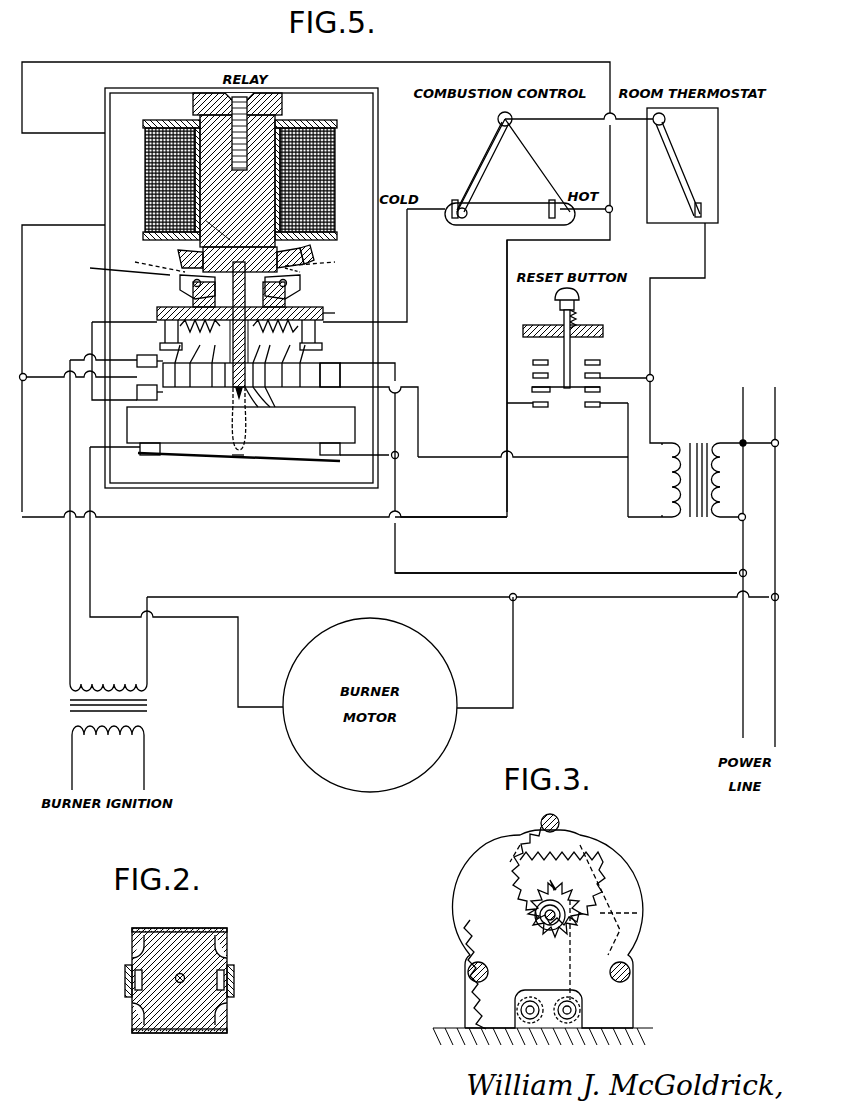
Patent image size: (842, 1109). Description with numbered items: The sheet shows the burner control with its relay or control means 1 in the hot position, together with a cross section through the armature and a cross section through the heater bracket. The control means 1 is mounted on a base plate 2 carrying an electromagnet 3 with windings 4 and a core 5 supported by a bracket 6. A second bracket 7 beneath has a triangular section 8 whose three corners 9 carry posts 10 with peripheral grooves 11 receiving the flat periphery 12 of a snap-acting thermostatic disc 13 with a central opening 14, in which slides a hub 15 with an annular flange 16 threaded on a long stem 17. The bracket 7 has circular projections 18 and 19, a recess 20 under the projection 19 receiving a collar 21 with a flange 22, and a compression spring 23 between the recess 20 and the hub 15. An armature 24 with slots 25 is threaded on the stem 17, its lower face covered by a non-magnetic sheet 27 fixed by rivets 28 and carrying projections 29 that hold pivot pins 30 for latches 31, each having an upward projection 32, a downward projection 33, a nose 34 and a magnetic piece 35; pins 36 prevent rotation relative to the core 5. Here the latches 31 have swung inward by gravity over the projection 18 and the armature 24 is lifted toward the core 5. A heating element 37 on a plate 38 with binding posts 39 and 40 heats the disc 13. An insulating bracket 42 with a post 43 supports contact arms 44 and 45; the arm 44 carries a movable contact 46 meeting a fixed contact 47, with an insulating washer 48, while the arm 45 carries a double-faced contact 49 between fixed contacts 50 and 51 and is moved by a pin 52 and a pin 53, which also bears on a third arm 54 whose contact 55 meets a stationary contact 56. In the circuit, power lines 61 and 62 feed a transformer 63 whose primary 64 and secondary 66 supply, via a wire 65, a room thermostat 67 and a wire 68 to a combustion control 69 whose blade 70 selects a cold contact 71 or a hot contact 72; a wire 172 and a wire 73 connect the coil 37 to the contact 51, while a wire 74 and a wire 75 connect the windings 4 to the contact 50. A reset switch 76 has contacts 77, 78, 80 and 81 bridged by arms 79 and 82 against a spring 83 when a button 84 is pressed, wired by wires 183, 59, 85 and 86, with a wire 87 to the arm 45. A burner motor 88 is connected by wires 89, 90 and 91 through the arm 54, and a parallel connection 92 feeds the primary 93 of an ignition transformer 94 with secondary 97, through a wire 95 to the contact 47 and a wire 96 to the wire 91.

In FIG. 5, the control means 1 is at (367, 88).
In FIG. 5, the base plate 2 is at (373, 130).
In FIG. 5, the electromagnet 3 is at (303, 116).
In FIG. 5, the windings 4 is at (335, 166).
In FIG. 5, the core 5 is at (205, 140).
In FIG. 5, the bracket 6 is at (196, 95).
In FIG. 3, the second bracket 7 is at (633, 1000).
In FIG. 3, the triangular section 8 is at (524, 833).
In FIG. 3, the corners 9 is at (560, 817).
In FIG. 5, the posts 10 is at (157, 313).
In FIG. 3, the posts 10 is at (541, 820).
In FIG. 5, the peripheral grooves 11 is at (160, 347).
In FIG. 5, the flat periphery 12 is at (312, 363).
In FIG. 5, the thermostatic disc 13 is at (276, 363).
In FIG. 5, the central opening 14 is at (190, 366).
In FIG. 5, the hub 15 is at (214, 366).
In FIG. 5, the annular flange 16 is at (257, 366).
In FIG. 5, the stem 17 is at (232, 380).
In FIG. 2, the stem 17 is at (185, 978).
In FIG. 3, the stem 17 is at (535, 912).
In FIG. 5, the circular projection 18 is at (287, 397).
In FIG. 5, the circular projection 19 is at (291, 366).
In FIG. 5, the recess 20 is at (263, 290).
In FIG. 3, the recess 20 is at (530, 918).
In FIG. 5, the collar 21 is at (193, 290).
In FIG. 3, the collar 21 is at (520, 870).
In FIG. 5, the flange 22 is at (205, 255).
In FIG. 5, the compression spring 23 is at (230, 340).
In FIG. 3, the compression spring 23 is at (565, 905).
In FIG. 5, the armature 24 is at (205, 235).
In FIG. 2, the armature 24 is at (228, 942).
In FIG. 5, the slots 25 is at (148, 230).
In FIG. 2, the slots 25 is at (138, 952).
In FIG. 5, the non-magnetic metallic sheet 27 is at (178, 255).
In FIG. 2, the non-magnetic metallic sheet 27 is at (195, 928).
In FIG. 2, the rivets 28 is at (145, 928).
In FIG. 5, the projections 29 is at (222, 263).
In FIG. 2, the projections 29 is at (132, 960).
In FIG. 5, the pivot pin 30 is at (120, 267).
In FIG. 5, the latches 31 is at (178, 283).
In FIG. 2, the latches 31 is at (118, 995).
In FIG. 5, the upward projection 32 is at (300, 252).
In FIG. 2, the upward projection 32 is at (135, 985).
In FIG. 5, the downward projection 33 is at (295, 330).
In FIG. 5, the nose 34 is at (300, 270).
In FIG. 2, the nose 34 is at (145, 1020).
In FIG. 5, the magnetic piece 35 is at (312, 256).
In FIG. 2, the magnetic piece 35 is at (125, 975).
In FIG. 5, the pins 36 is at (148, 180).
In FIG. 2, the pins 36 is at (175, 928).
In FIG. 5, the electrical resistance heating element 37 is at (170, 366).
In FIG. 3, the electrical resistance heating element 37 is at (572, 862).
In FIG. 5, the plate 38 is at (180, 330).
In FIG. 3, the plate 38 is at (600, 870).
In FIG. 3, the binding post 39 is at (521, 1012).
In FIG. 5, the binding post 40 is at (335, 313).
In FIG. 3, the binding post 40 is at (576, 1012).
In FIG. 5, the insulating material bracket 42 is at (283, 461).
In FIG. 5, the post 43 is at (340, 377).
In FIG. 5, the contact arm 44 is at (265, 365).
In FIG. 5, the contact arm 45 is at (268, 408).
In FIG. 5, the movable contact 46 is at (137, 358).
In FIG. 5, the fixed contact 47 is at (160, 362).
In FIG. 5, the insulating washer 48 is at (257, 411).
In FIG. 5, the double-faced movable contact 49 is at (158, 393).
In FIG. 5, the fixed contact 50 is at (137, 390).
In FIG. 5, the fixed contact 51 is at (241, 425).
In FIG. 5, the pin 52 is at (231, 410).
In FIG. 5, the pin 53 is at (238, 458).
In FIG. 5, the third spring contact arm 54 is at (175, 456).
In FIG. 5, the movable contact 55 is at (330, 458).
In FIG. 5, the stationary contact 56 is at (340, 458).
In FIG. 5, the wire 59 is at (612, 235).
In FIG. 5, the wire 61 is at (742, 680).
In FIG. 5, the wire 62 is at (754, 567).
In FIG. 5, the low voltage transformer 63 is at (704, 433).
In FIG. 5, the primary 64 is at (722, 520).
In FIG. 5, the wire 65 is at (706, 236).
In FIG. 5, the secondary 66 is at (664, 487).
In FIG. 5, the room thermostat 67 is at (718, 167).
In FIG. 5, the wire 68 is at (570, 119).
In FIG. 5, the combustion control device 69 is at (480, 155).
In FIG. 5, the thermostatic blade 70 is at (486, 168).
In FIG. 5, the stationary contact 71 is at (452, 200).
In FIG. 5, the stationary contact 72 is at (549, 208).
In FIG. 5, the wire 73 is at (95, 320).
In FIG. 5, the wire 74 is at (555, 63).
In FIG. 5, the wire 75 is at (92, 225).
In FIG. 5, the manually operated switching device 76 is at (612, 323).
In FIG. 5, the contact 77 is at (600, 376).
In FIG. 5, the contact 78 is at (533, 376).
In FIG. 5, the switching contact arm 79 is at (560, 358).
In FIG. 5, the contact 80 is at (592, 408).
In FIG. 5, the contact 81 is at (540, 408).
In FIG. 5, the contact arm 82 is at (565, 395).
In FIG. 5, the compression spring 83 is at (555, 318).
In FIG. 5, the button 84 is at (580, 296).
In FIG. 5, the wire 85 is at (30, 415).
In FIG. 5, the wire 86 is at (650, 443).
In FIG. 5, the wire 87 is at (345, 390).
In FIG. 5, the burner motor 88 is at (352, 790).
In FIG. 5, the wire 89 is at (513, 660).
In FIG. 5, the wire 90 is at (95, 495).
In FIG. 5, the wire 91 is at (398, 488).
In FIG. 5, the parallel connection 92 is at (350, 597).
In FIG. 5, the primary 93 is at (108, 676).
In FIG. 5, the burner ignition transformer 94 is at (157, 710).
In FIG. 5, the wire 95 is at (68, 360).
In FIG. 5, the wire 96 is at (390, 360).
In FIG. 5, the secondary 97 is at (113, 742).
In FIG. 5, the wire 172 is at (408, 256).
In FIG. 5, the wire 183 is at (653, 376).